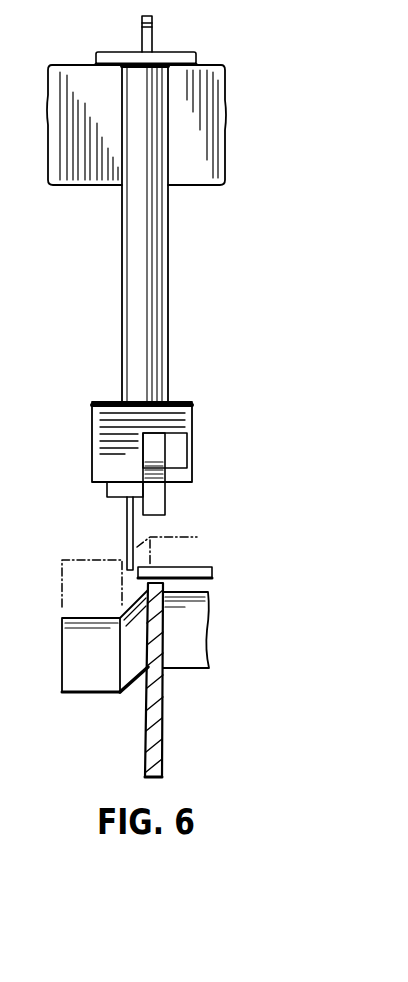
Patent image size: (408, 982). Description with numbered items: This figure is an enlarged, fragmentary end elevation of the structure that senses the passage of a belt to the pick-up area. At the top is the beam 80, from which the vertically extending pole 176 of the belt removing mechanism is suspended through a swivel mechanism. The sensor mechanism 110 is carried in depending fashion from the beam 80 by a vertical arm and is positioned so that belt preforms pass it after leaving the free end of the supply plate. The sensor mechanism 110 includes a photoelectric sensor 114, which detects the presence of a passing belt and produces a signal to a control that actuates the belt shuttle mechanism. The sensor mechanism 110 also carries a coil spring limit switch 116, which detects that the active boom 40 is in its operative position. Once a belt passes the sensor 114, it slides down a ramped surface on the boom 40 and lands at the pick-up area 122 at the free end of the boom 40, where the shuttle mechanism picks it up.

The beam 80 is at (203, 131).
The pole 176 is at (157, 307).
The sensor mechanism 110 is at (232, 433).
The photoelectric sensor 114 is at (158, 502).
The coil spring limit switch 116 is at (127, 533).
The boom 40 is at (197, 637).
The pick-up area 122 is at (83, 673).